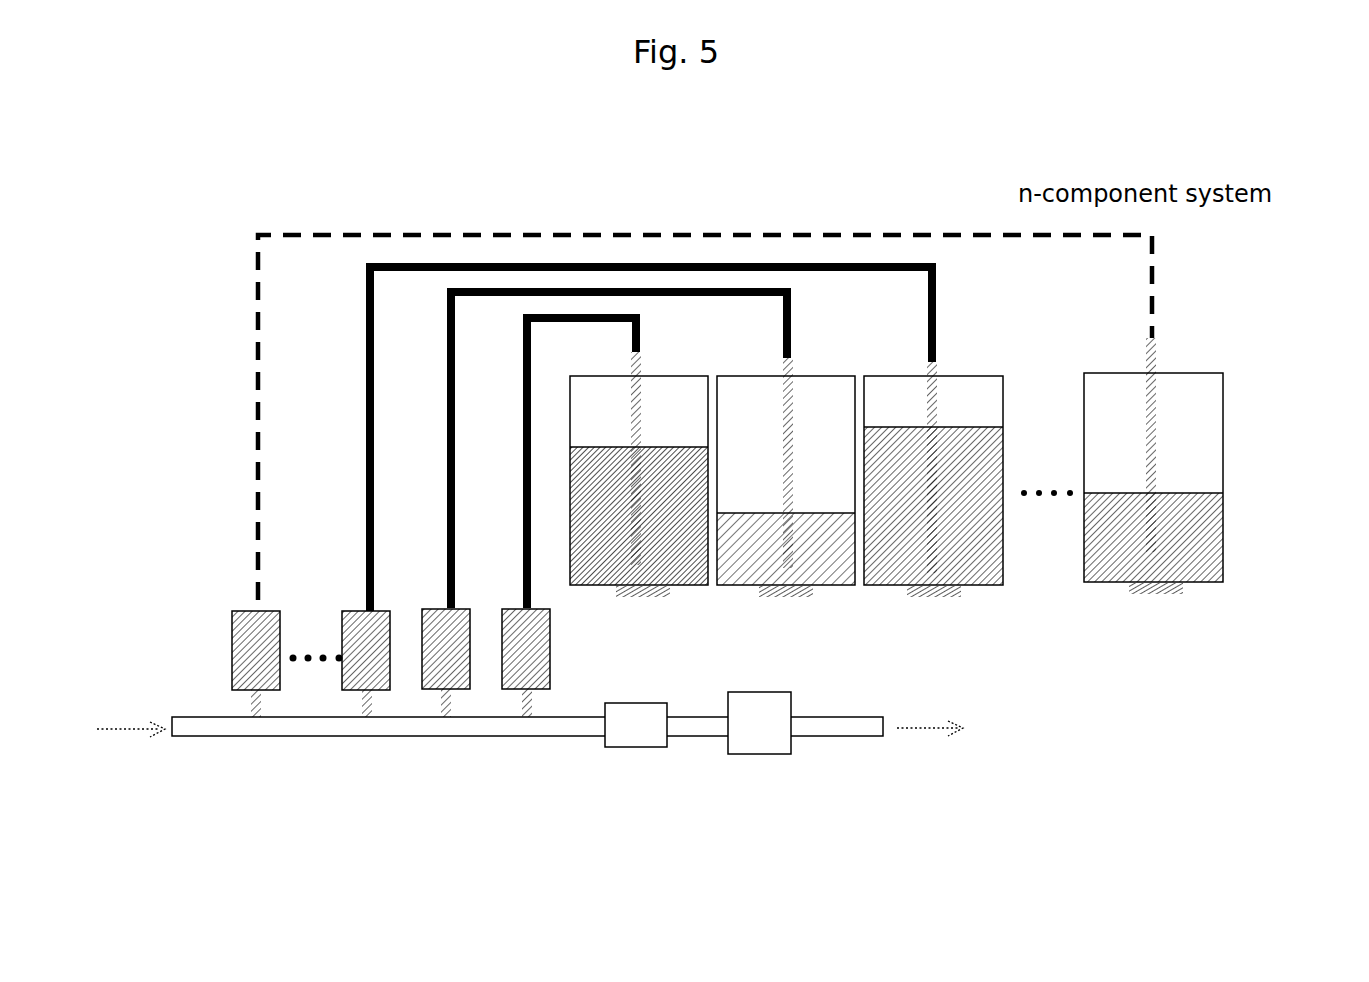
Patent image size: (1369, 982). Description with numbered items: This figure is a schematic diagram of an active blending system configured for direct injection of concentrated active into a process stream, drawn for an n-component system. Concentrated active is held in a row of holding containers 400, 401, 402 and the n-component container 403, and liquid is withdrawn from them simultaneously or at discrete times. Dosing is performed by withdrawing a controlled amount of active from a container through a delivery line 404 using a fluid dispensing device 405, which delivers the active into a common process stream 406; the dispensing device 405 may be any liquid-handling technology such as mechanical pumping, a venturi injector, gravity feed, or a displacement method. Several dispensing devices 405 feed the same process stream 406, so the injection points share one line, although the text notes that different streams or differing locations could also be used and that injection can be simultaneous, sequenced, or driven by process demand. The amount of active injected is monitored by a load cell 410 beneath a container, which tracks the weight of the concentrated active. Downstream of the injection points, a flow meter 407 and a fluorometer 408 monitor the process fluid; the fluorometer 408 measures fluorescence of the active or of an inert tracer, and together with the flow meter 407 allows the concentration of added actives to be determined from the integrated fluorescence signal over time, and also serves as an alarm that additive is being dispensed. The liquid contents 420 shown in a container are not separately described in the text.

The holding container 400 is at (662, 373).
The holding container 401 is at (813, 373).
The holding container 402 is at (973, 375).
The n-component holding container 403 is at (1215, 485).
The delivery line 404 is at (423, 262).
The fluid dispensing device 405 is at (240, 610).
The process stream 406 is at (203, 710).
The flow meter 407 is at (630, 748).
The fluorometer 408 is at (767, 757).
The load cell 410 is at (1159, 597).
The component fluid 420 is at (1198, 518).